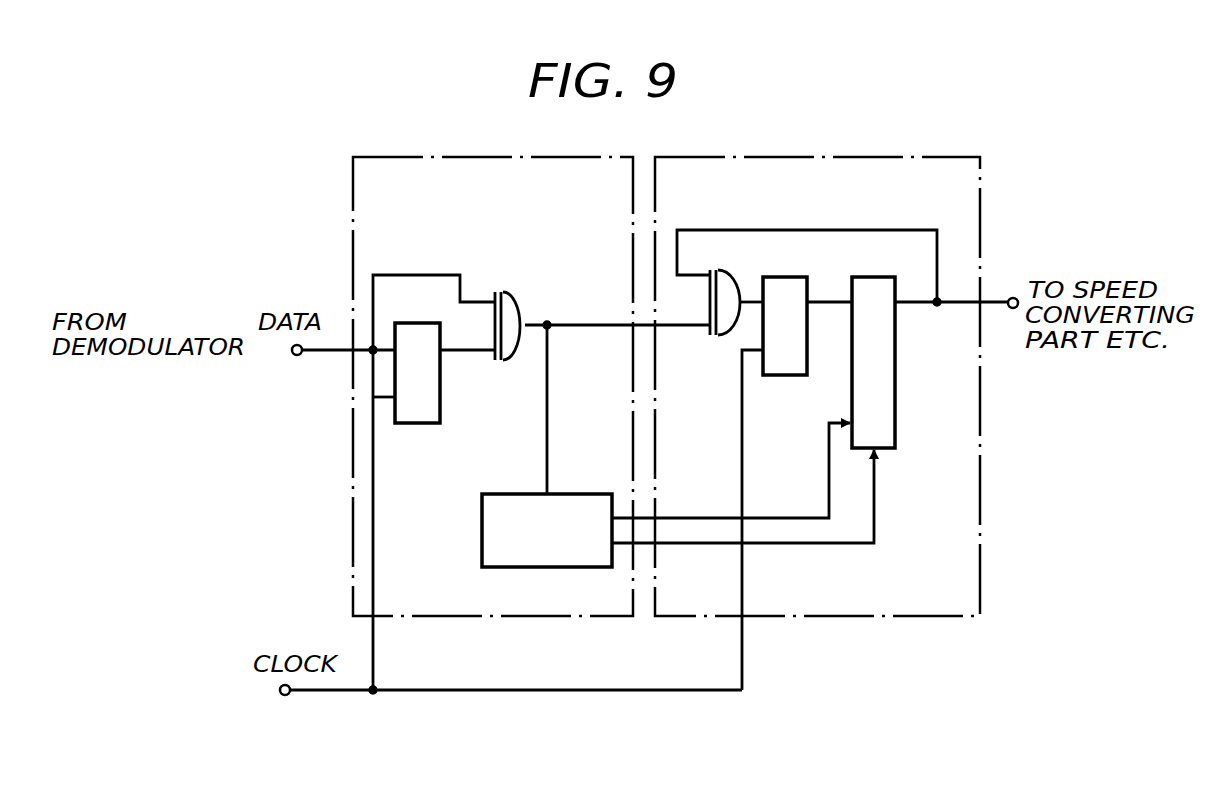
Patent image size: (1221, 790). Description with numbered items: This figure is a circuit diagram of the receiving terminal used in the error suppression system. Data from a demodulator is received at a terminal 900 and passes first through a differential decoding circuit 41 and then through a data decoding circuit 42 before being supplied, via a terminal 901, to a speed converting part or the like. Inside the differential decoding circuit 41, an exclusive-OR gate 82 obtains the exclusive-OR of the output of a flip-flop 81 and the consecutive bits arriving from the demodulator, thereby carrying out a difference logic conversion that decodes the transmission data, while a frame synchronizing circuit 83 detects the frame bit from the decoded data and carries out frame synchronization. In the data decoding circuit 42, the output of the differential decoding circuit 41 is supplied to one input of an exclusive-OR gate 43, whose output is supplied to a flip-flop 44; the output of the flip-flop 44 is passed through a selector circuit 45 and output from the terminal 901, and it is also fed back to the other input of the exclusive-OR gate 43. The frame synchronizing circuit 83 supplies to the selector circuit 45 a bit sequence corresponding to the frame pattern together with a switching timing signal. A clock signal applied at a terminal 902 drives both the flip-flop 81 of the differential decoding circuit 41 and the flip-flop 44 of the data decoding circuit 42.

The differential decoding circuit 41 is at (385, 157).
The data decoding circuit 42 is at (762, 157).
The exclusive-OR gate 43 is at (722, 338).
The flip-flop 44 is at (790, 377).
The selector circuit 45 is at (896, 400).
The flip-flop 81 is at (418, 423).
The exclusive-OR gate 82 is at (510, 362).
The frame synchronizing circuit 83 is at (482, 537).
The terminal 900 is at (297, 356).
The terminal 901 is at (1013, 298).
The terminal 902 is at (287, 696).